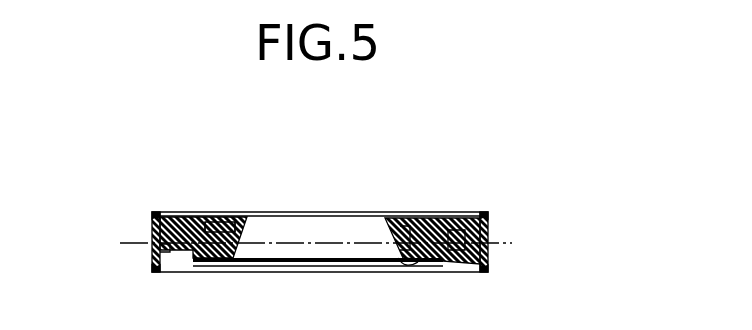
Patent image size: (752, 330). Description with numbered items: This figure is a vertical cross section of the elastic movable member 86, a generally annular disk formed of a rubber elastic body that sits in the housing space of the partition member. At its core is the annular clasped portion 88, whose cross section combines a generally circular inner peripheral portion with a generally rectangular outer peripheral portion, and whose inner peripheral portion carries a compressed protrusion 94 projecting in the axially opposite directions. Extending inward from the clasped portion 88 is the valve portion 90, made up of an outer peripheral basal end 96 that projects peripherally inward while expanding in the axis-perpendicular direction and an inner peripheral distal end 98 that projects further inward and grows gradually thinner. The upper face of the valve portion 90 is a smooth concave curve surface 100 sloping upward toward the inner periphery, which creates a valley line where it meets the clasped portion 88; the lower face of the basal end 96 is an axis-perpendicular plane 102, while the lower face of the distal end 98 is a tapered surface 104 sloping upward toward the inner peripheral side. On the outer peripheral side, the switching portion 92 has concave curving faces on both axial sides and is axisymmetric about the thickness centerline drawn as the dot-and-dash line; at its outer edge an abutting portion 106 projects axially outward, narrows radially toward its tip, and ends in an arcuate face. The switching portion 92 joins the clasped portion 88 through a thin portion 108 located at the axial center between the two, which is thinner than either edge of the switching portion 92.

The elastic movable member 86 is at (475, 207).
The clasped portion 88 is at (192, 236).
The valve portion 90 is at (192, 153).
The switching portion 92 is at (158, 249).
The compressed protrusion 94 is at (440, 226).
The outer peripheral basal end 96 is at (221, 236).
The inner peripheral distal end 98 is at (241, 232).
The concave curve surface 100 is at (409, 236).
The axis-perpendicular plane 102 is at (412, 258).
The tapered surface 104 is at (398, 250).
The abutting portion 106 is at (155, 214).
The thin portion 108 is at (174, 250).